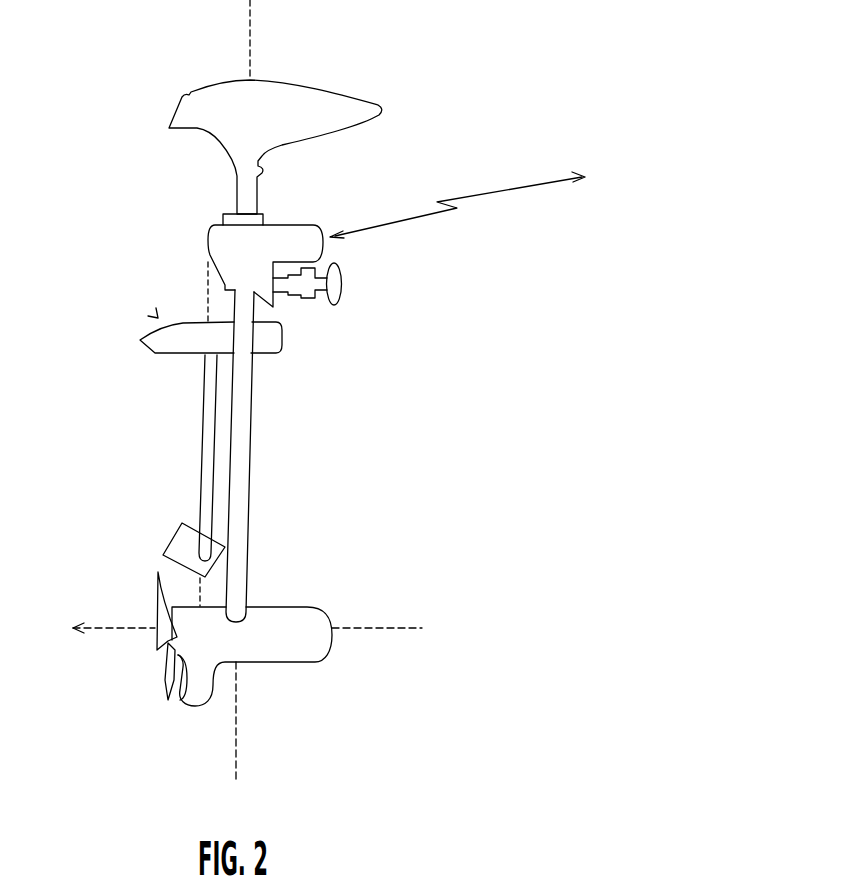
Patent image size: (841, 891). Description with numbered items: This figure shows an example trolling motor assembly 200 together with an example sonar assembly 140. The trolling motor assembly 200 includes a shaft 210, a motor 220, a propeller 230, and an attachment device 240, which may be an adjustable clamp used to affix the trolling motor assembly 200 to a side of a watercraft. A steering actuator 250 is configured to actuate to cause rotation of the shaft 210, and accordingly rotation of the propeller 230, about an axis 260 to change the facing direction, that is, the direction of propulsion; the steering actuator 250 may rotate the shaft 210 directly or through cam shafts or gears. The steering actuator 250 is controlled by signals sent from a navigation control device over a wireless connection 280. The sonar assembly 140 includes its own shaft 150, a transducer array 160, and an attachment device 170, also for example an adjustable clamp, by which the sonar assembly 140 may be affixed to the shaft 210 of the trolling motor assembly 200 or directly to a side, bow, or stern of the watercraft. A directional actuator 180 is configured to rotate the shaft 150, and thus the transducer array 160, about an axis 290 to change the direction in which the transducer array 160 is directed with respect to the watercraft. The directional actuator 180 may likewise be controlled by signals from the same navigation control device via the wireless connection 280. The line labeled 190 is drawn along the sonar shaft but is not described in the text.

The sonar assembly 140 is at (155, 316).
The shaft 150 is at (198, 453).
The transducer array 160 is at (167, 547).
The attachment device 170 is at (262, 361).
The directional actuator 180 is at (157, 356).
The rod axis 190 is at (207, 277).
The trolling motor assembly 200 is at (385, 89).
The shaft 210 is at (246, 512).
The motor 220 is at (298, 608).
The propeller 230 is at (165, 675).
The attachment device 240 is at (284, 312).
The steering actuator 250 is at (310, 226).
The axis 260 is at (253, 55).
The wireless connection 280 is at (497, 192).
The axis 290 is at (123, 628).